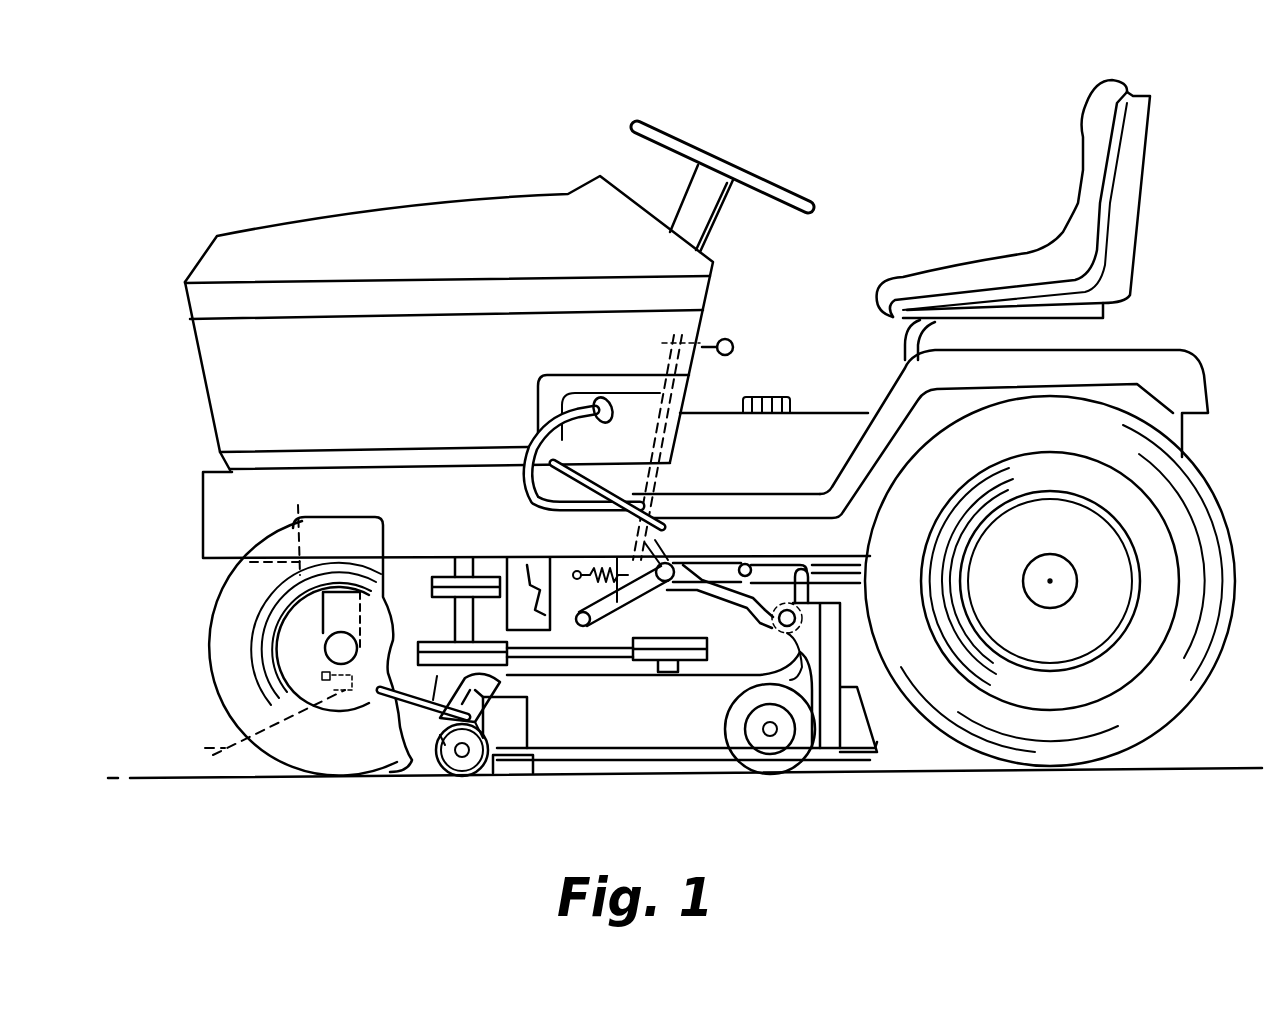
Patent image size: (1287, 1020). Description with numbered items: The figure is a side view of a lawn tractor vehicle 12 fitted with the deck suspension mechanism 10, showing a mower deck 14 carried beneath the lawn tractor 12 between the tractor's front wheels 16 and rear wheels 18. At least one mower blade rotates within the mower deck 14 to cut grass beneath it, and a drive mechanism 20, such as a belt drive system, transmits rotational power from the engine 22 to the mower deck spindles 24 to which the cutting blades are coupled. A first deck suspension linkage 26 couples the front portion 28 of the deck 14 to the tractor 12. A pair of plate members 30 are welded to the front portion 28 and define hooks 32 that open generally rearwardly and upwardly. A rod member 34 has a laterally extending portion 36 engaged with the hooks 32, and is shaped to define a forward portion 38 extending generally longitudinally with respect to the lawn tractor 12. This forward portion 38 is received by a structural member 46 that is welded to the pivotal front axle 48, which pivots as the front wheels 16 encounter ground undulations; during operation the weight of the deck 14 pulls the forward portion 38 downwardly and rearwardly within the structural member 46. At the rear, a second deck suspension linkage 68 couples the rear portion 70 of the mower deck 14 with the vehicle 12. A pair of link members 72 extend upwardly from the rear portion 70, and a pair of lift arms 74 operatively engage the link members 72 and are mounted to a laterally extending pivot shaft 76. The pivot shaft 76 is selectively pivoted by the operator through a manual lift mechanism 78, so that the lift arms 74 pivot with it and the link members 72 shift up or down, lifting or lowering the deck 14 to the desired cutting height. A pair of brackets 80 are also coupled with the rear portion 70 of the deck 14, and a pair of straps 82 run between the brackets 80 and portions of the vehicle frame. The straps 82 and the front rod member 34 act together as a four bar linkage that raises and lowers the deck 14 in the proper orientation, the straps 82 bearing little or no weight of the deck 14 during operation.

The deck suspension mechanism 10 is at (362, 799).
The lawn tractor vehicle 12 is at (348, 186).
The mower deck 14 is at (682, 737).
The wheels 16 is at (205, 640).
The rear wheel 18 is at (1205, 700).
The drive mechanism 20 is at (615, 660).
The engine 22 is at (264, 212).
The mower deck spindles 24 is at (697, 667).
The first deck suspension linkage 26 is at (424, 700).
The front portion of the deck 28 is at (535, 742).
The plate members 30 is at (490, 752).
The hooks 32 is at (505, 678).
The rod member 34 is at (410, 685).
The laterally extending portion 36 is at (433, 700).
The forward portion of the rod member 38 is at (352, 720).
The structural member 46 is at (254, 727).
The front axle 48 is at (295, 518).
The second deck suspension linkage 68 is at (860, 682).
The rear portion of the deck 70 is at (850, 727).
The link members 72 is at (858, 560).
The lift arms 74 is at (788, 562).
The pivot shaft 76 is at (752, 560).
The manual lift mechanism 78 is at (516, 526).
The brackets 80 is at (805, 637).
The straps 82 is at (712, 540).